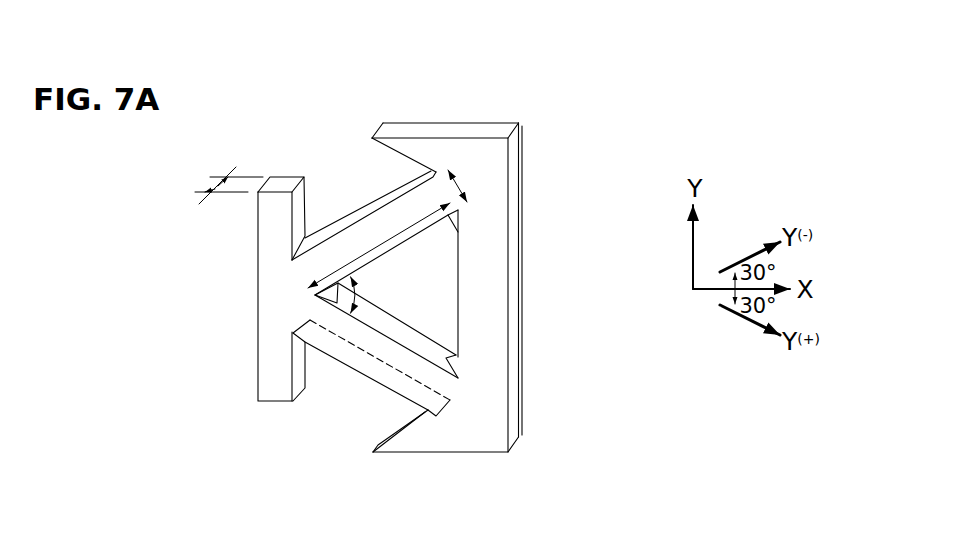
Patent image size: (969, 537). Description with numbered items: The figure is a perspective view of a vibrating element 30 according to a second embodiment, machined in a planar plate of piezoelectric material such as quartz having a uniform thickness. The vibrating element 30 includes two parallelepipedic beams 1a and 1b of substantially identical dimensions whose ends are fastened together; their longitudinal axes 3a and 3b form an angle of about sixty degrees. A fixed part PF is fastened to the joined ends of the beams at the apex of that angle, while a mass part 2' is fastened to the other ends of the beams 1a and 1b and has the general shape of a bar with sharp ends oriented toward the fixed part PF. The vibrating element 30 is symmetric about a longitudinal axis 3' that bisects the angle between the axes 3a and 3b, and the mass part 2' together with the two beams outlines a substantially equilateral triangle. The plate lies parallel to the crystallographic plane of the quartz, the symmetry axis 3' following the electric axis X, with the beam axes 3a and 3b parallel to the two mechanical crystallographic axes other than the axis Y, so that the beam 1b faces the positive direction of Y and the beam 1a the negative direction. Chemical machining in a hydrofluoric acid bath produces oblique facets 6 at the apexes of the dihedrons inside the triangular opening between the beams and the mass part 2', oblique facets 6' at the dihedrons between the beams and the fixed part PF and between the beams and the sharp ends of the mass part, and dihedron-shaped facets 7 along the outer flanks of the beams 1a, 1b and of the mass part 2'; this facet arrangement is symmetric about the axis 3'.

The vibrating element 30 is at (492, 73).
The beam 1a is at (318, 262).
The beam 1b is at (330, 331).
The facets having the shape of dihedrons 7 is at (364, 208).
The oblique facets 6 is at (382, 303).
The oblique facets 6' is at (323, 295).
The mass part 2' is at (482, 287).
The fixed part PF is at (272, 378).
The longitudinal axis 3a is at (520, 142).
The longitudinal axis 3' is at (589, 292).
The longitudinal axis 3b is at (523, 432).